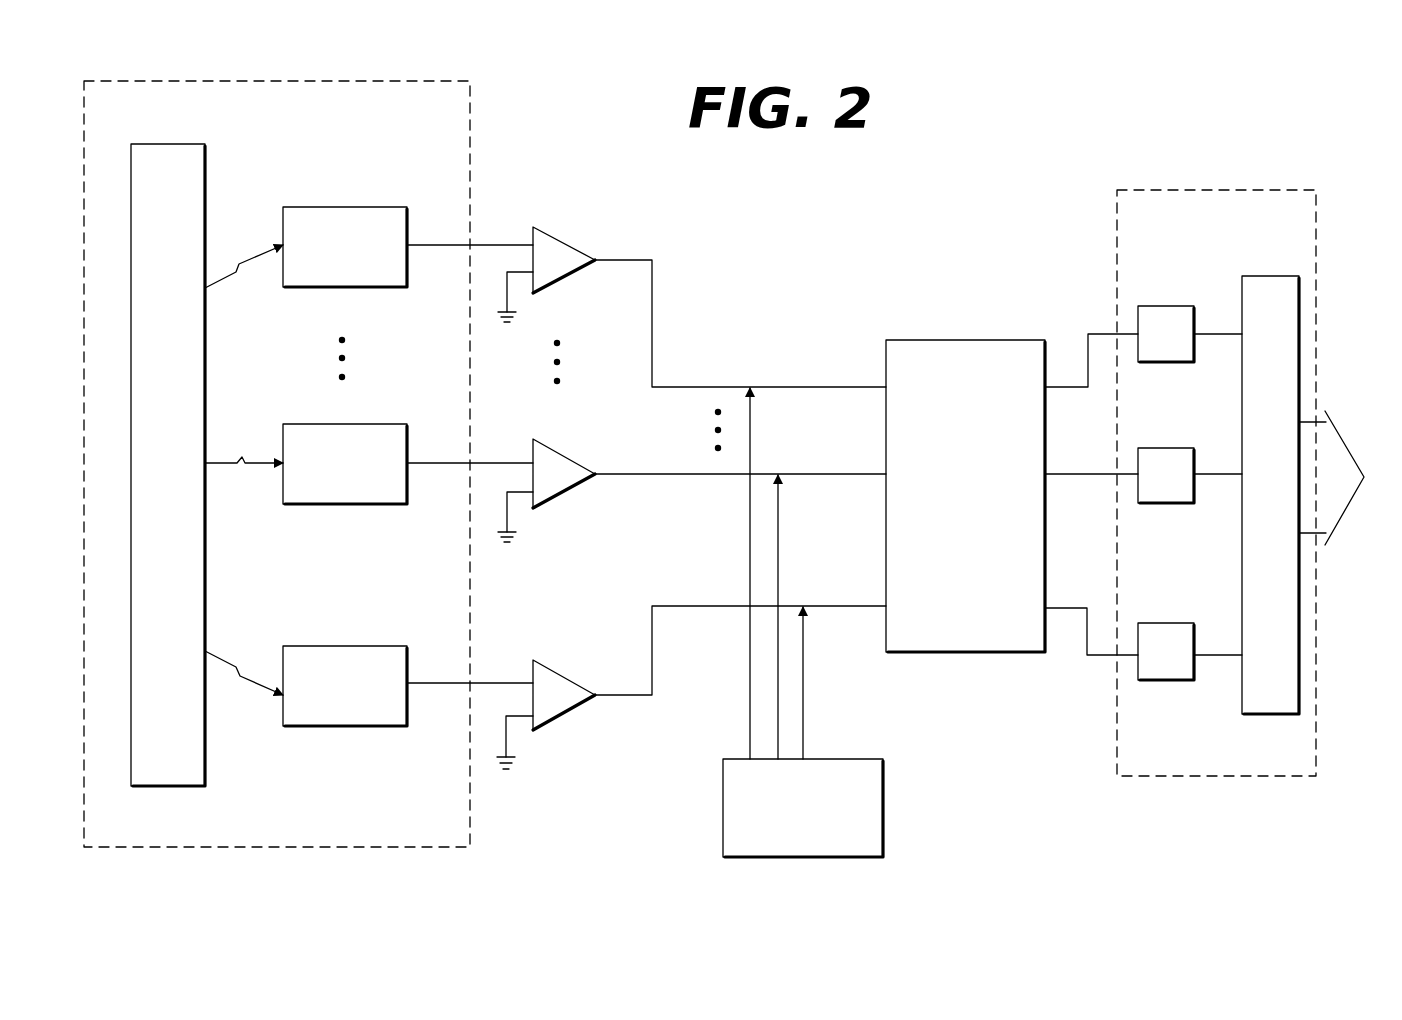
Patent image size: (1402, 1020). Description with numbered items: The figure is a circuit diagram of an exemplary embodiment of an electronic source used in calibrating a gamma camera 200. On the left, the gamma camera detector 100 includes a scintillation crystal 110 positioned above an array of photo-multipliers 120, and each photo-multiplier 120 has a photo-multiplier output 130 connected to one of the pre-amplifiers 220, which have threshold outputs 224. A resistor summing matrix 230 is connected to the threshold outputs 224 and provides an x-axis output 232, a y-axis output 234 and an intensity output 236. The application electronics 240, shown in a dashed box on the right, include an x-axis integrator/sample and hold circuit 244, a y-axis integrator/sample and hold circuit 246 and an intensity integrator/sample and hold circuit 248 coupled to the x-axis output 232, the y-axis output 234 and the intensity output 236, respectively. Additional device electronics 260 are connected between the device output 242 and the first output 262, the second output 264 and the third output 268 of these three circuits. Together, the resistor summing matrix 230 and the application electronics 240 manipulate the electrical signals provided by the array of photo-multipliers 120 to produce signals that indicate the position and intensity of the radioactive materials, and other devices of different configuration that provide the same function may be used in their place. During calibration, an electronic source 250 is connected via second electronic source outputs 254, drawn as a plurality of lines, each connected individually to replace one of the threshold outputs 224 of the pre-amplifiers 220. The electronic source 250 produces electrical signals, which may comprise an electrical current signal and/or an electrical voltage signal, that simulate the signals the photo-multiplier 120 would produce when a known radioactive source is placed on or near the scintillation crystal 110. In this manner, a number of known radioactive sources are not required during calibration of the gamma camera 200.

The gamma camera detector 100 is at (470, 117).
The scintillation crystal 110 is at (158, 143).
The photo-multiplier 120 is at (334, 207).
The photo-multiplier output 130 is at (428, 245).
The gamma camera 200 is at (860, 215).
The pre-amplifier 220 is at (563, 239).
The threshold output 224 is at (653, 303).
The resistor summing matrix 230 is at (940, 340).
The x-axis output 232 is at (1062, 387).
The y-axis output 234 is at (1087, 473).
The intensity output 236 is at (1065, 607).
The application electronics 240 is at (1162, 186).
The device output 242 is at (1333, 423).
The x-axis integrator/sample and hold circuit 244 is at (1155, 305).
The y-axis integrator/sample and hold circuit 246 is at (1155, 447).
The intensity integrator/sample and hold circuit 248 is at (1155, 622).
The electronic source 250 is at (883, 810).
The second electronic source outputs 254 is at (750, 674).
The additional device electronics 260 is at (1240, 693).
The first output 262 is at (1218, 333).
The second output 264 is at (1218, 473).
The third output 268 is at (1220, 654).